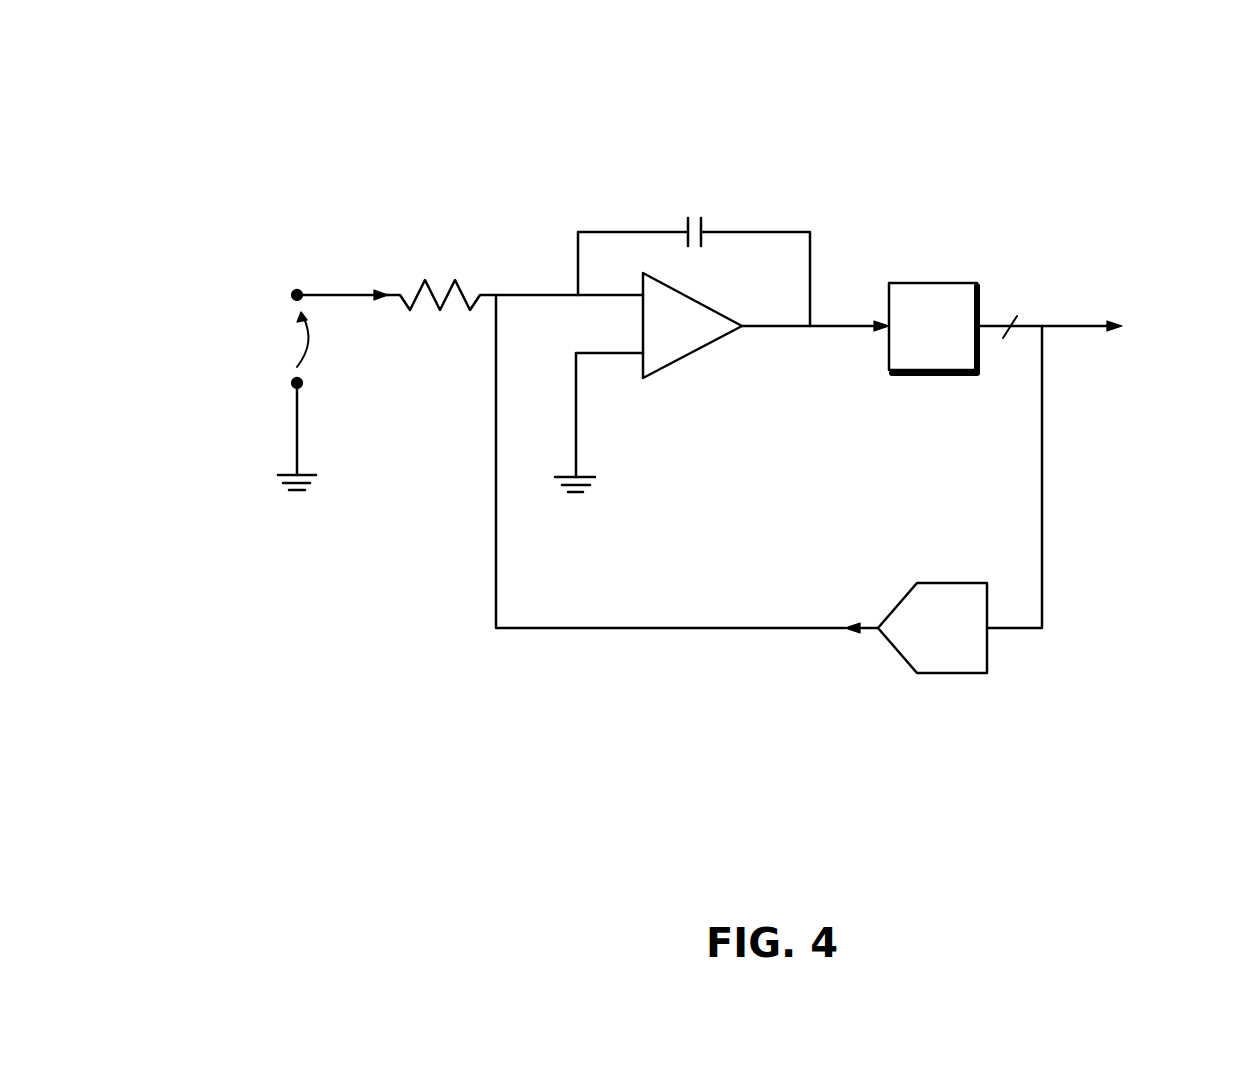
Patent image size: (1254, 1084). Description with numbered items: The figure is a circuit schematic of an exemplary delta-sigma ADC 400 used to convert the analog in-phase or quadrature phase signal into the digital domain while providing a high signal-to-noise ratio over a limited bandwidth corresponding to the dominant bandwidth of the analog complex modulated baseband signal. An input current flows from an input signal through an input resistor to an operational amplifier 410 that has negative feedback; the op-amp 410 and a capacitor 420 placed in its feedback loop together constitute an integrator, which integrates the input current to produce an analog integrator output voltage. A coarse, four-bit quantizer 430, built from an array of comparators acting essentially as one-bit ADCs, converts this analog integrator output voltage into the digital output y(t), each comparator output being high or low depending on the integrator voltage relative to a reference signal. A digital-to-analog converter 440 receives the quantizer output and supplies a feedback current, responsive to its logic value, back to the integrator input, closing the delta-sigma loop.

The delta-sigma ADC 400 is at (1095, 128).
The operational amplifier 410 is at (692, 357).
The capacitor 420 is at (705, 225).
The quantizer 430 is at (945, 377).
The digital-to-analog converter 440 is at (950, 673).